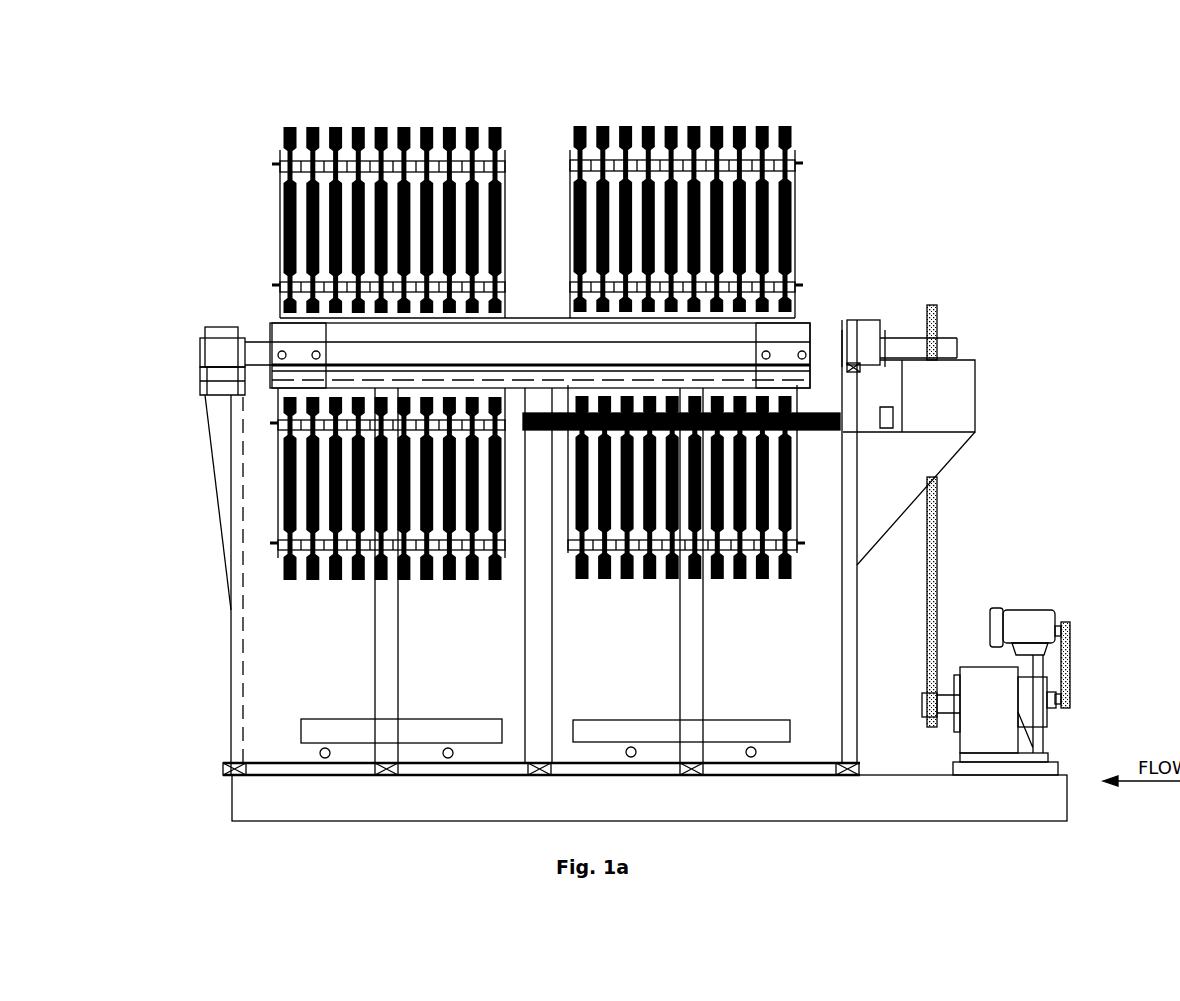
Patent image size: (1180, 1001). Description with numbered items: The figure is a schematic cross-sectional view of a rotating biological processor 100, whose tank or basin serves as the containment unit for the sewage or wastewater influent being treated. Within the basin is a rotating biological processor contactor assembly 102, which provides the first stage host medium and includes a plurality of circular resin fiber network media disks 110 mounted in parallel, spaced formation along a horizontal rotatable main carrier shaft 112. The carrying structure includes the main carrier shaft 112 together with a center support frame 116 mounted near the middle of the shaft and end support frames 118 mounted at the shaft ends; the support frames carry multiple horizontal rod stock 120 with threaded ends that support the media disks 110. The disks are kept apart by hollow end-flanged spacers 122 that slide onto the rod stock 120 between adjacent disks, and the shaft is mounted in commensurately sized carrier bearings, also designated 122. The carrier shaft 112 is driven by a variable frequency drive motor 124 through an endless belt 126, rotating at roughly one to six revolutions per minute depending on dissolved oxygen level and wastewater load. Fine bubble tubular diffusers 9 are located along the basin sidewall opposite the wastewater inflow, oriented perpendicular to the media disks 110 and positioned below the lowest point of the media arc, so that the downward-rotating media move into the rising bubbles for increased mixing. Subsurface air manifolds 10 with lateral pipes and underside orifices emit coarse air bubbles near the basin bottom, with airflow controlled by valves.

The rotating biological processor 100 is at (110, 56).
The rotating biological processor contactor assembly 102 is at (885, 187).
The media disks 110 is at (333, 127).
The main carrier shaft 112 is at (538, 330).
The middle support frame 116 is at (552, 202).
The end support frames 118 is at (280, 230).
The horizontal rod stock 120 is at (273, 166).
The spacers 122 is at (347, 160).
The motor 124 is at (1028, 603).
The endless belt 126 is at (937, 552).
The fine bubble tubular diffusers 9 is at (418, 722).
The subsurface air manifolds 10 is at (325, 760).